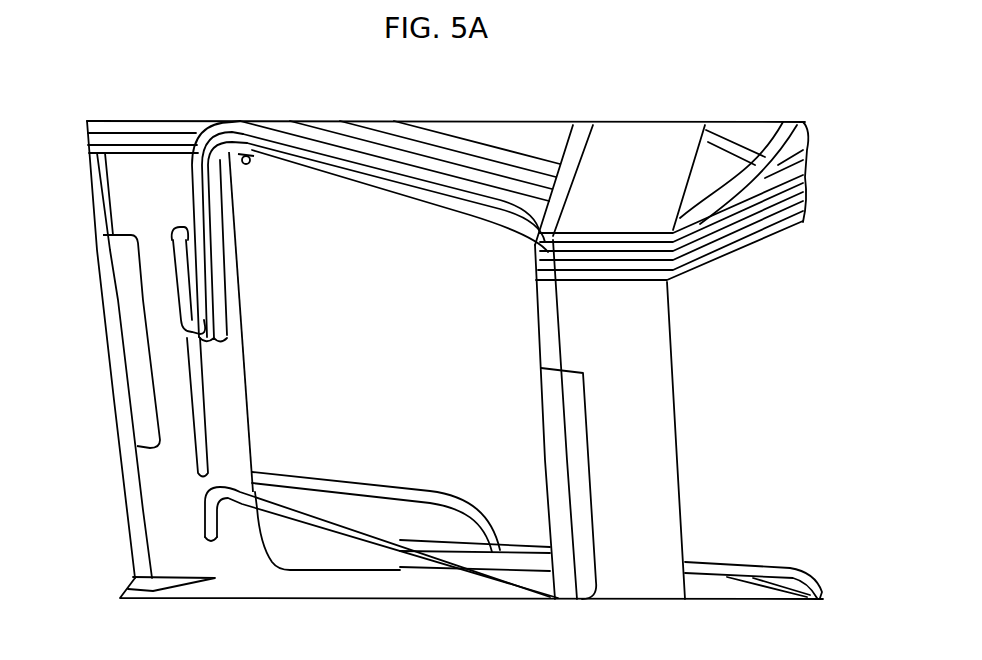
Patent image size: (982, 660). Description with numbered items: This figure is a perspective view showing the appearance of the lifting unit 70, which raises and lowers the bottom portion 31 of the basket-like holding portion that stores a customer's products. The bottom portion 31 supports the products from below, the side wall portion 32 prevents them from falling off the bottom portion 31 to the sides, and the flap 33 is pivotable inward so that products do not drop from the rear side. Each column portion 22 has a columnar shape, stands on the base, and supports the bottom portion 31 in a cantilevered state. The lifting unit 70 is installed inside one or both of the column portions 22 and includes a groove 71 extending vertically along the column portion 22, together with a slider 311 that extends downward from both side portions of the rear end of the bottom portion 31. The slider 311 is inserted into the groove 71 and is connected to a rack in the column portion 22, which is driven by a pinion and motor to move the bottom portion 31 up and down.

The column portion 22 is at (247, 409).
The bottom portion 31 is at (250, 162).
The side wall portion 32 is at (781, 123).
The flap 33 is at (368, 157).
The slider 311 is at (200, 343).
The lifting unit 70 is at (166, 388).
The groove 71 is at (200, 448).